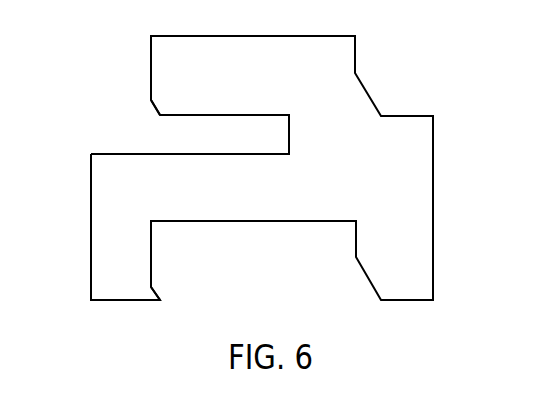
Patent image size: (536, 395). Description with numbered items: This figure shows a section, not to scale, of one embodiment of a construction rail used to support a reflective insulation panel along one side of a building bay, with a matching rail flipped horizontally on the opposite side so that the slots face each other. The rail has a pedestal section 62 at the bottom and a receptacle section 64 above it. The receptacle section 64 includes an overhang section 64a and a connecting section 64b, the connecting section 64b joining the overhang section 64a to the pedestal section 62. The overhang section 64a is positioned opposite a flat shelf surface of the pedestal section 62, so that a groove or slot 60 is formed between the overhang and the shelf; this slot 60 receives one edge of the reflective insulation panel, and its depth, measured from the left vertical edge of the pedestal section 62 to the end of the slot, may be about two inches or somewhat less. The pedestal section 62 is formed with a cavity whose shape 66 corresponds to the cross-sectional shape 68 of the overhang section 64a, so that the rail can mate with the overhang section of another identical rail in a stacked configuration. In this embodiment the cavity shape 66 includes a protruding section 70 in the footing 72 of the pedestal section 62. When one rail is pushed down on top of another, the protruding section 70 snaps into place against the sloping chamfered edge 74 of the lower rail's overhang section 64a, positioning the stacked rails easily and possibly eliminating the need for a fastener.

The groove or slot 60 is at (260, 190).
The pedestal section 62 is at (227, 248).
The receptacle section 64 is at (260, 95).
The overhang section 64a is at (450, 37).
The connecting section 64b is at (450, 117).
The shape of the cavity 66 is at (266, 260).
The cross-sectional shape of the overhang section 68 is at (266, 76).
The protruding section 70 is at (161, 291).
The footing 72 is at (160, 308).
The sloping chamfered edge 74 is at (146, 112).